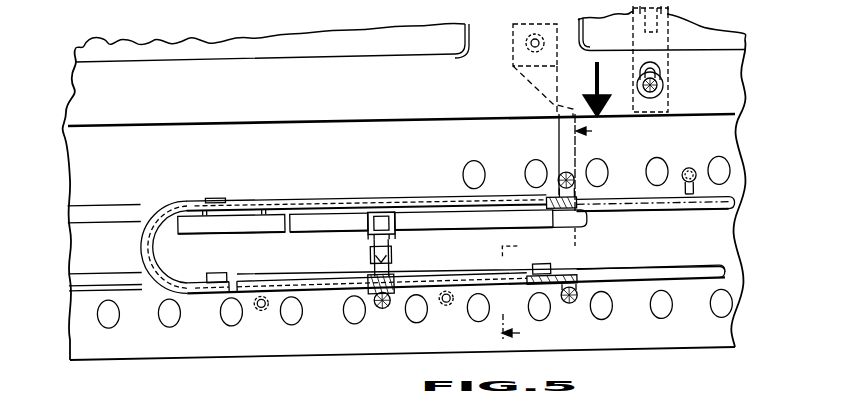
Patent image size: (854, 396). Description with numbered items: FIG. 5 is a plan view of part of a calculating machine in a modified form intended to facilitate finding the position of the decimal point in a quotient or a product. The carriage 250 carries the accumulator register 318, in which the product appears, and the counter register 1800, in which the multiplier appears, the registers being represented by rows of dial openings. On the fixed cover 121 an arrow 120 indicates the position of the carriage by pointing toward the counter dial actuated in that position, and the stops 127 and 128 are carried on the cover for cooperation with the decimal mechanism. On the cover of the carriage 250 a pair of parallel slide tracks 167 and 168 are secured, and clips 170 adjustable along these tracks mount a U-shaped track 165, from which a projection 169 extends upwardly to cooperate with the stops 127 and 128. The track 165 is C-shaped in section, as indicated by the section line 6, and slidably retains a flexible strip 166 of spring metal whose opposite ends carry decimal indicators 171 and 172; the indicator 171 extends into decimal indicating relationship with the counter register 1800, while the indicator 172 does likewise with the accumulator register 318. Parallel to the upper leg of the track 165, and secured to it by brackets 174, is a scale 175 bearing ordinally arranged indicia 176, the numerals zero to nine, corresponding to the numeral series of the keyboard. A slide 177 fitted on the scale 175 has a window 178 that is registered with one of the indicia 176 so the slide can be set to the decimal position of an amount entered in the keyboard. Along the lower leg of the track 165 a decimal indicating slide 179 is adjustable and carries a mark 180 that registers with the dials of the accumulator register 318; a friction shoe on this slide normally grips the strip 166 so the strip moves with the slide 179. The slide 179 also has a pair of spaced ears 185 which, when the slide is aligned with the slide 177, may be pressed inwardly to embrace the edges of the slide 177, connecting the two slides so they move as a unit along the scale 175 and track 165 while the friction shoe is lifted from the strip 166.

The cover 121 is at (744, 20).
The arrow 120 is at (598, 66).
The stop 127 is at (669, 70).
The stop 128 is at (511, 70).
The section line VI-VI 6 is at (553, 228).
The projection 169 is at (560, 160).
The decimal indicator 171 is at (576, 176).
The counter register 1800 is at (463, 172).
The slide track 167 is at (629, 203).
The bracket 174 is at (190, 212).
The clip 170 is at (228, 191).
The indicia 176 is at (272, 211).
The U-shaped track 165 is at (358, 203).
The scale 175 is at (478, 228).
The slide 177 is at (369, 237).
The window 178 is at (372, 250).
The ears 185 is at (392, 254).
The decimal indicating slide 179 is at (366, 284).
The mark 180 is at (383, 309).
The decimal indicator 172 is at (568, 307).
The flexible strip 166 is at (572, 232).
The slide track 168 is at (655, 258).
The accumulator register 318 is at (94, 311).
The carriage 250 is at (346, 354).